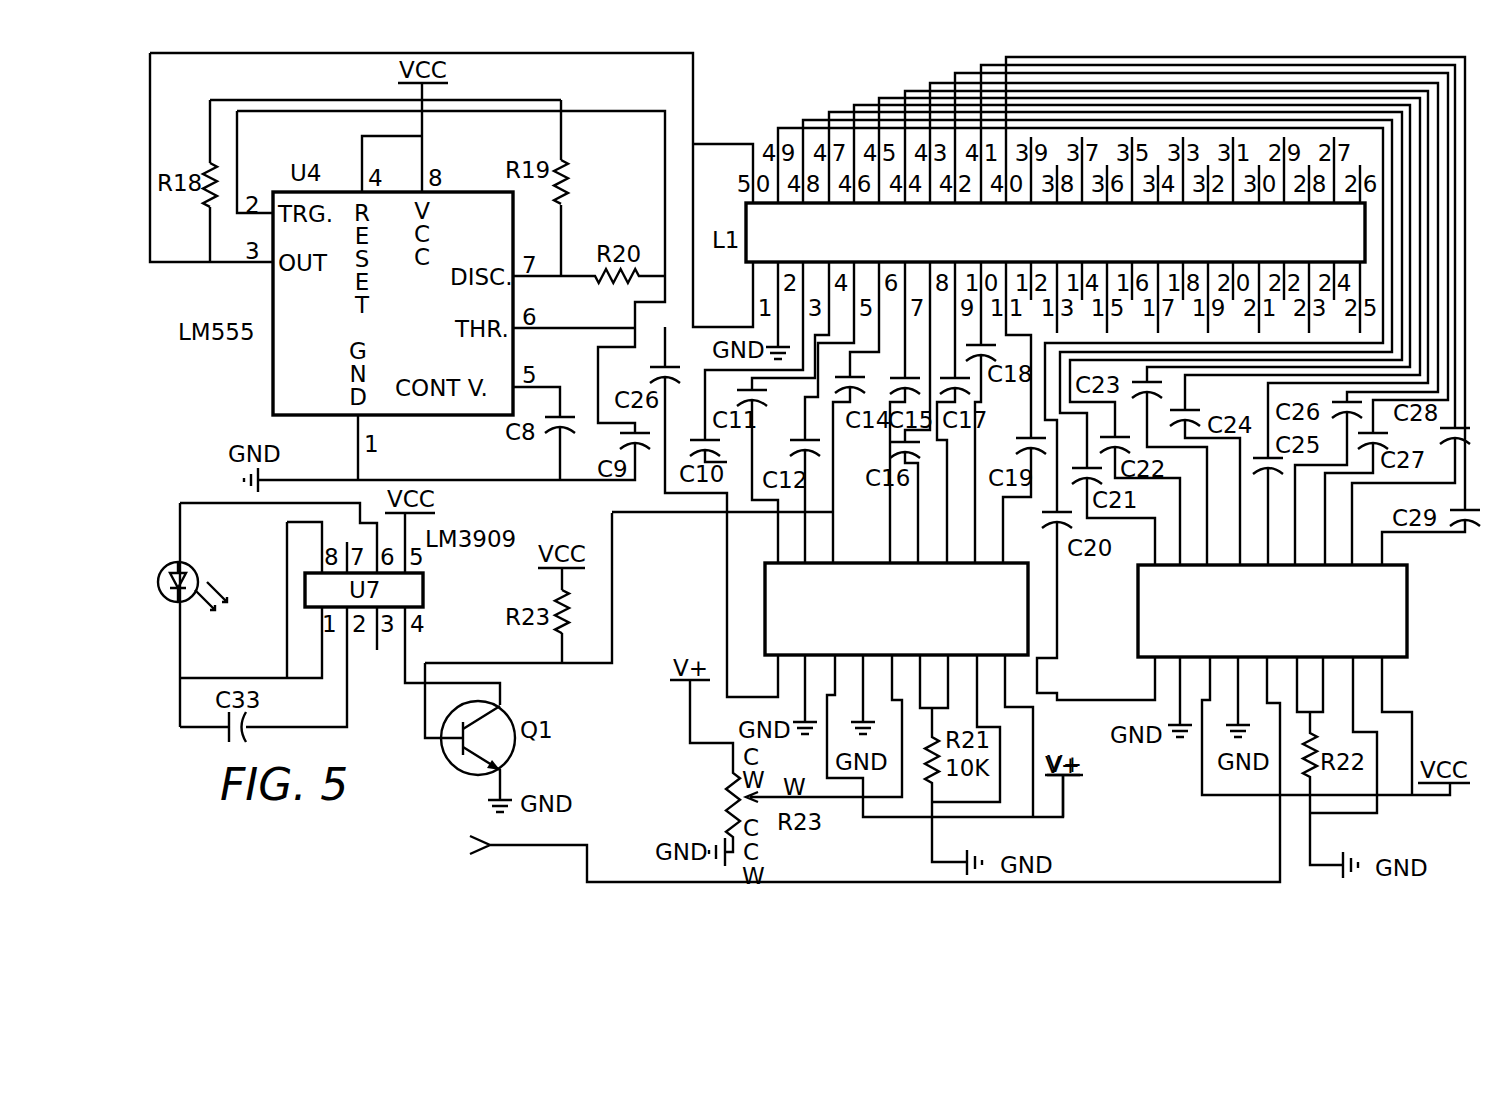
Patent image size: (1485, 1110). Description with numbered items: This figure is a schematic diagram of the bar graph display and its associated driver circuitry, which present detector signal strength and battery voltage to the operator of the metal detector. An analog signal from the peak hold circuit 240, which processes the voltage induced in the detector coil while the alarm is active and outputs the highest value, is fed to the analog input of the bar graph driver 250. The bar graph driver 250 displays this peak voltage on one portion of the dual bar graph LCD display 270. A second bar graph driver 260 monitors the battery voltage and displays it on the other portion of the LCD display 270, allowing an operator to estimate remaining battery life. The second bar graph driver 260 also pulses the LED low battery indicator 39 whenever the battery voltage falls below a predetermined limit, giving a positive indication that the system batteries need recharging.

The dual bar graph LCD display 270 is at (1292, 247).
The second bar graph driver 260 is at (780, 586).
The bar graph driver 250 is at (1395, 613).
The peak hold circuit 240 is at (725, 773).
The LED low battery indicator 39 is at (180, 670).